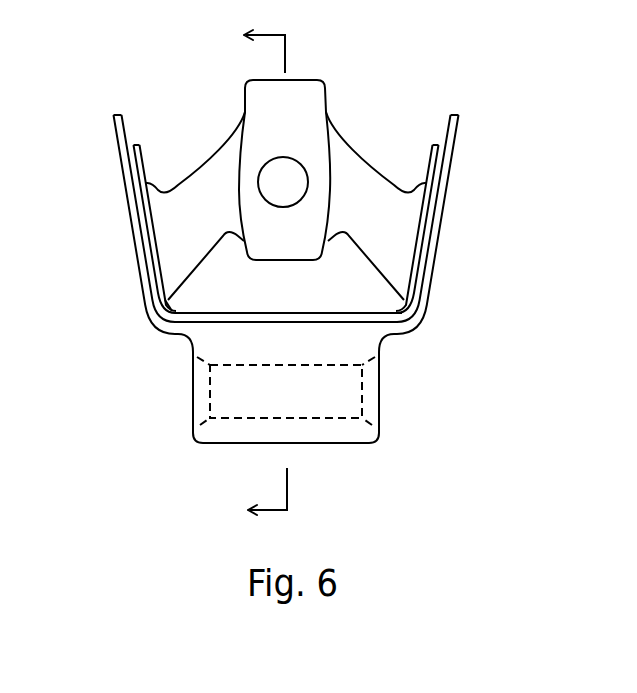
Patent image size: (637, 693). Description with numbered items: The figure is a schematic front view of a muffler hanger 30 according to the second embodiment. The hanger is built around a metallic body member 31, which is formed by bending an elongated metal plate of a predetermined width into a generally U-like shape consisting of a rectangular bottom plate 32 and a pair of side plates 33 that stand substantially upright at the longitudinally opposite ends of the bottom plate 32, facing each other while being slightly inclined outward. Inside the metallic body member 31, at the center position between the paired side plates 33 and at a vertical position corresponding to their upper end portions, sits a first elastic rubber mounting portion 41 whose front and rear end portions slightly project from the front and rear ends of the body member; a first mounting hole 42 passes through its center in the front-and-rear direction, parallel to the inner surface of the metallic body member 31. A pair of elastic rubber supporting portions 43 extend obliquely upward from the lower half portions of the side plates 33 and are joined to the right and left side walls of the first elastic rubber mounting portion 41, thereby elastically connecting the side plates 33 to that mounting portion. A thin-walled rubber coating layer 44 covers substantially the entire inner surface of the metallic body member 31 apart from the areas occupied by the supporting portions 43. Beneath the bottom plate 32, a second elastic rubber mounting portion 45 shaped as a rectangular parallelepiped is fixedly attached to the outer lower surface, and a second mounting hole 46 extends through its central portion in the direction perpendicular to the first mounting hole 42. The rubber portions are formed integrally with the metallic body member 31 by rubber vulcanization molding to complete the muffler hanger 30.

The muffler hanger 30 is at (383, 81).
The metallic body member 31 is at (455, 110).
The bottom plate 32 is at (378, 353).
The side plates 33 is at (129, 212).
The first elastic rubber mounting portion 41 is at (311, 261).
The first mounting hole 42 is at (268, 197).
The elastic rubber supporting portions 43 is at (203, 258).
The rubber coating layer 44 is at (171, 327).
The second elastic rubber mounting portion 45 is at (363, 445).
The second mounting hole 46 is at (310, 416).